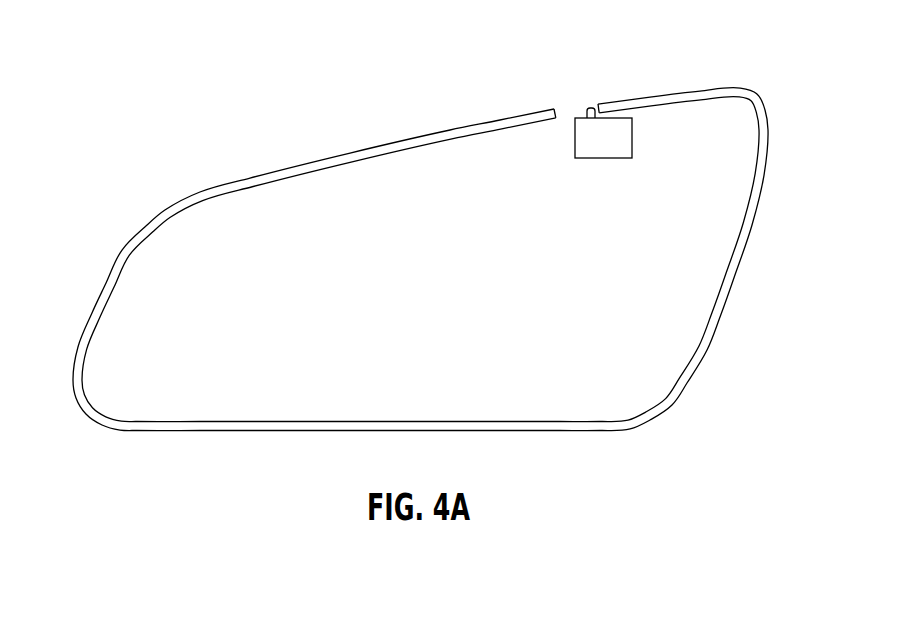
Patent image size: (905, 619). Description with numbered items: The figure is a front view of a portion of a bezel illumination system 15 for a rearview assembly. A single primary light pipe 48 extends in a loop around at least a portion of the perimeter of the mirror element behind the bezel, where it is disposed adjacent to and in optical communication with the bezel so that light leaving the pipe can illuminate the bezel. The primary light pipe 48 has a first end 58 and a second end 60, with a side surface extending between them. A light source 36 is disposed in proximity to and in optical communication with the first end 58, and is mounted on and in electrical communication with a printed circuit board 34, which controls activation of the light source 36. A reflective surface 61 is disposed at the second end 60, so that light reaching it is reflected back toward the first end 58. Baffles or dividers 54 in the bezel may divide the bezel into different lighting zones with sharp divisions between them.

The bezel illumination system 15 is at (188, 143).
The printed circuit board 34 is at (623, 145).
The light source 36 is at (590, 108).
The primary light pipe 48 is at (768, 150).
The baffles or dividers 54 is at (143, 243).
The first end 58 is at (598, 105).
The second end 60 is at (556, 112).
The reflective surface 61 is at (564, 110).